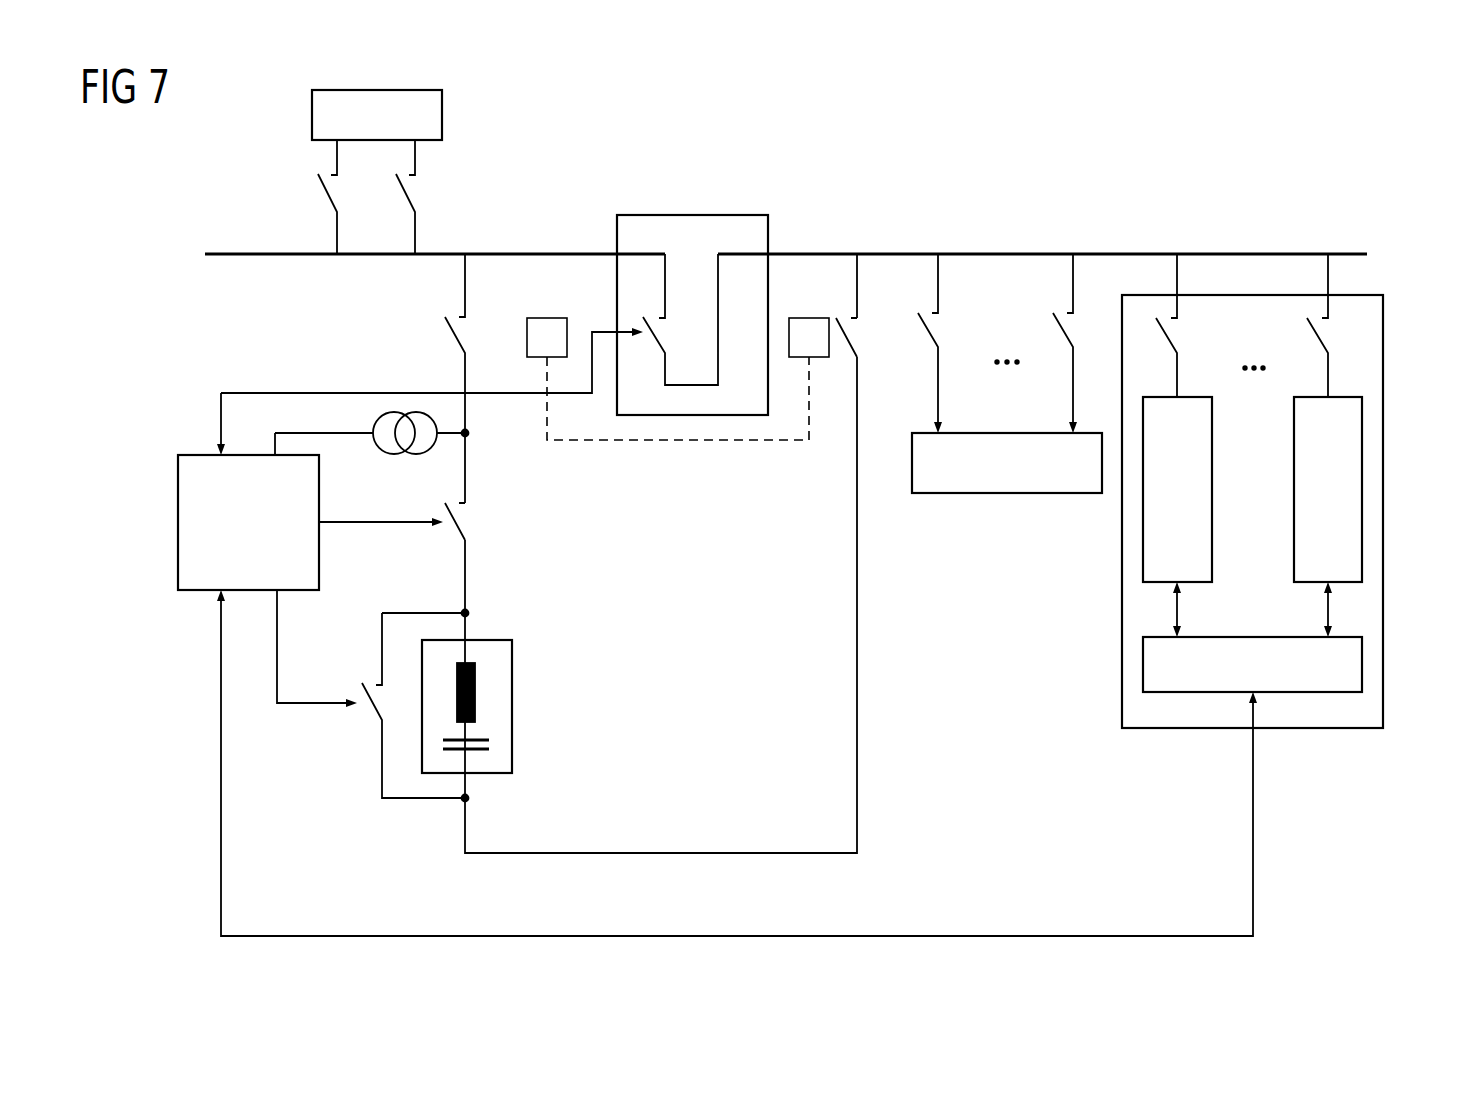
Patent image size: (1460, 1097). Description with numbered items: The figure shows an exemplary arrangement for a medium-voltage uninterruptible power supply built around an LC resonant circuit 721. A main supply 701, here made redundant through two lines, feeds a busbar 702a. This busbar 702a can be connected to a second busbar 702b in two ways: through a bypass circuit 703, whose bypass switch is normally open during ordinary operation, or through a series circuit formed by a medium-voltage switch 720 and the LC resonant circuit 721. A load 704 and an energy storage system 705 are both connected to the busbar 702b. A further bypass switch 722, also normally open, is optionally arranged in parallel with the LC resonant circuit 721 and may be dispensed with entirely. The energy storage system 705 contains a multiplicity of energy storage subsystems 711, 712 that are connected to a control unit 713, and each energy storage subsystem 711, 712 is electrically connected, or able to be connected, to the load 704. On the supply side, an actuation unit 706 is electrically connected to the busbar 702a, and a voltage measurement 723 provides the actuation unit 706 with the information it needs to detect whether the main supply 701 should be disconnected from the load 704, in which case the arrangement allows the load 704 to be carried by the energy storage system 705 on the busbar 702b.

The main supply 701 is at (442, 115).
The busbar 702a is at (245, 250).
The busbar 702b is at (1003, 250).
The bypass circuit 703 is at (690, 213).
The load 704 is at (975, 497).
The energy storage system 705 is at (1250, 532).
The actuation unit 706 is at (178, 515).
The energy storage subsystem 711 is at (1143, 562).
The energy storage subsystem 712 is at (1362, 485).
The control unit 713 is at (1143, 665).
The medium-voltage switch 720 is at (467, 525).
The LC resonant circuit 721 is at (512, 690).
The bypass switch 722 is at (368, 714).
The voltage measurement 723 is at (390, 412).